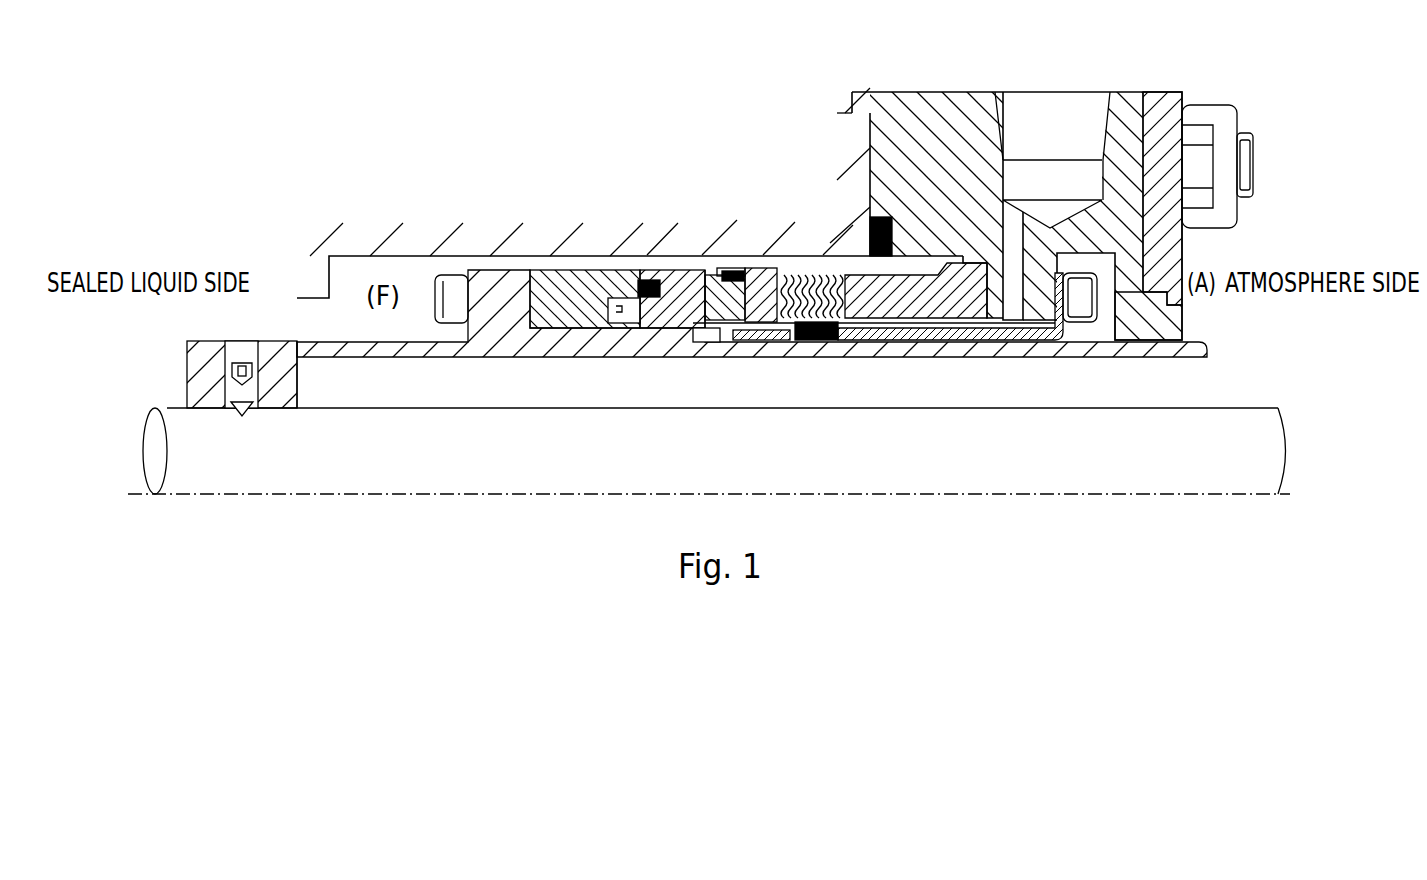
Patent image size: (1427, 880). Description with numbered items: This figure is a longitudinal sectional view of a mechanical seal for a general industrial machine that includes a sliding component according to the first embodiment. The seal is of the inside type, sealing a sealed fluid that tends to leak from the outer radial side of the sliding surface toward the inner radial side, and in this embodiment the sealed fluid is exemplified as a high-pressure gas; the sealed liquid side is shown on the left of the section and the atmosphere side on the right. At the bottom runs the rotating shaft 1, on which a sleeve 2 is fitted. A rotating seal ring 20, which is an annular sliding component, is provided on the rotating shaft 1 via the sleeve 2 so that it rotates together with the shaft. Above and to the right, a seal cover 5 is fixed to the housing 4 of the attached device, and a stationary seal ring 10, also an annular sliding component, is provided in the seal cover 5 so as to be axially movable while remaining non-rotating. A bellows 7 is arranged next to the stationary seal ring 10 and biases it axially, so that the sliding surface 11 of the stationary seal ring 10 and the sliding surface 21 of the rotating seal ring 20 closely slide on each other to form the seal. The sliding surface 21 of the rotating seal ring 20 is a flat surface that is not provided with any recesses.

The rotating shaft 1 is at (166, 407).
The sleeve 2 is at (577, 343).
The housing 4 is at (601, 236).
The seal cover 5 is at (934, 110).
The bellows 7 is at (805, 276).
The stationary seal ring 10 is at (737, 268).
The sliding surface 11 is at (696, 332).
The rotating seal ring 20 is at (699, 264).
The sliding surface 21 is at (722, 332).